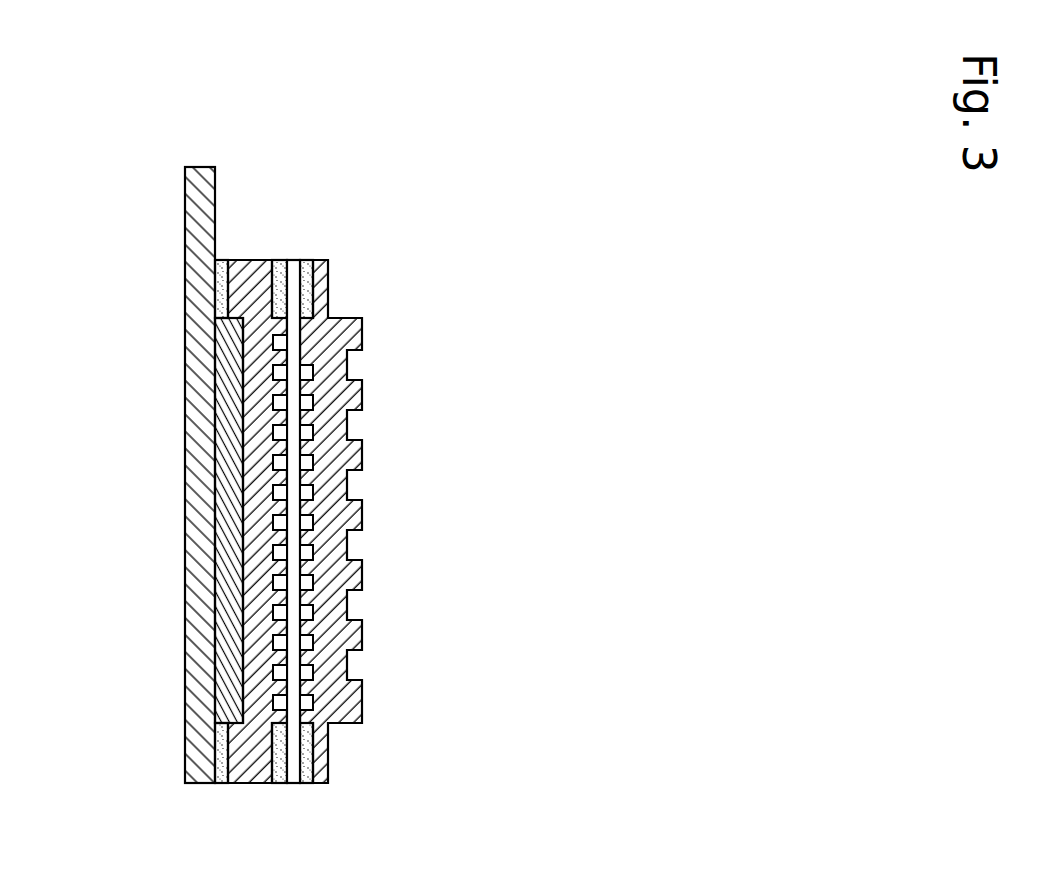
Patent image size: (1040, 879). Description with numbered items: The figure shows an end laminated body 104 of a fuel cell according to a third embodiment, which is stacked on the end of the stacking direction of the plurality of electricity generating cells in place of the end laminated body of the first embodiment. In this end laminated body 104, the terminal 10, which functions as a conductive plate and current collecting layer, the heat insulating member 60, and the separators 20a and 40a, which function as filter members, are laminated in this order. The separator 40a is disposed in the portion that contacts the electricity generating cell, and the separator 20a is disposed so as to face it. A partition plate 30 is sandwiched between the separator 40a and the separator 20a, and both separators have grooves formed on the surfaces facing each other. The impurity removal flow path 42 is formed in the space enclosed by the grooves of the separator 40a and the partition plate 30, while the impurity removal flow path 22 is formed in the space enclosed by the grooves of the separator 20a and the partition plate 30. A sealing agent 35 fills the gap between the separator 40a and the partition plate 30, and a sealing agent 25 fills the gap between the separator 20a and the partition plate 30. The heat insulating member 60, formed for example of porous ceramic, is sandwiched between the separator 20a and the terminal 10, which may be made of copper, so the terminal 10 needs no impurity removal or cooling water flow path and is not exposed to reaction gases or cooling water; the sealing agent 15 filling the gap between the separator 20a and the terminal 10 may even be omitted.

The end laminated body 104 is at (338, 167).
The terminal 10 is at (200, 172).
The sealing agent 15 is at (222, 788).
The separator 20a is at (250, 259).
The impurity removal flow path 22 is at (283, 342).
The sealing agent 25 is at (282, 788).
The partition plate 30 is at (295, 259).
The sealing agent 35 is at (307, 788).
The separator 40a is at (328, 282).
The impurity removal flow path 42 is at (307, 372).
The heat insulating member 60 is at (232, 400).